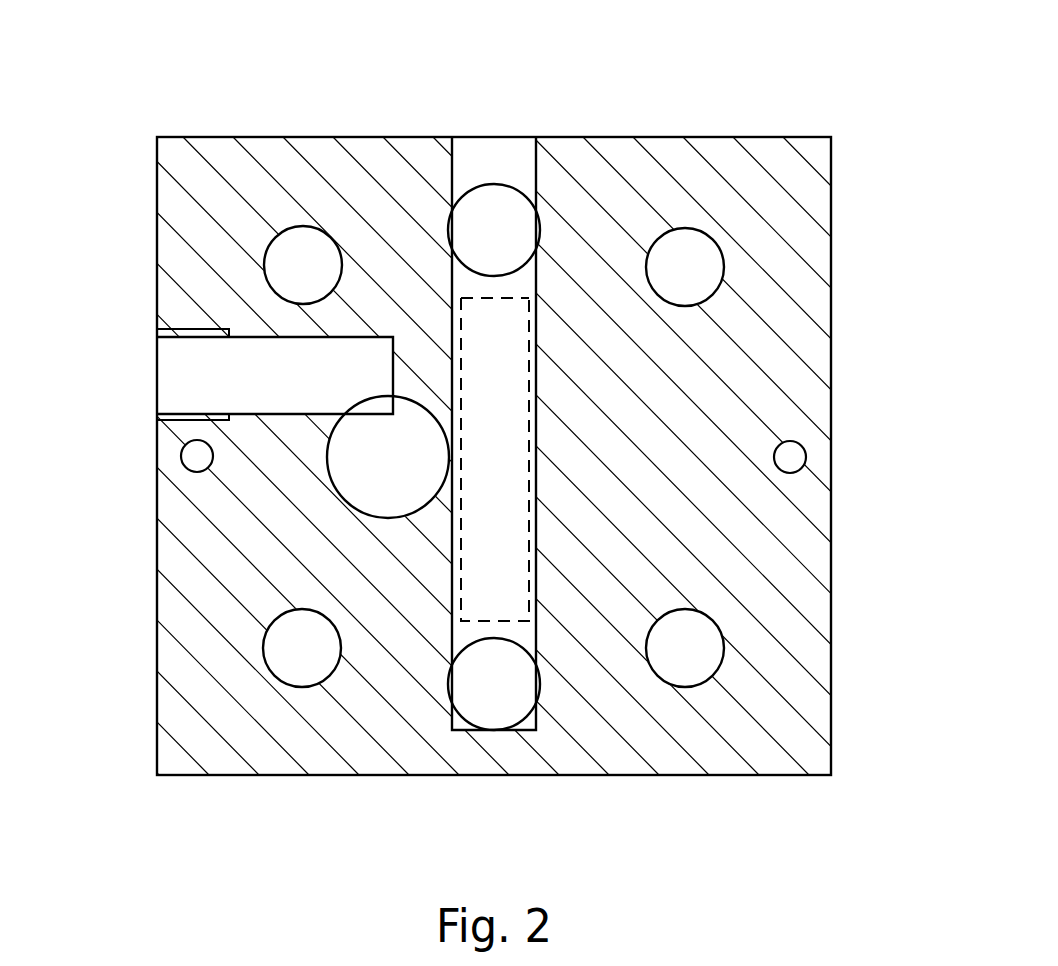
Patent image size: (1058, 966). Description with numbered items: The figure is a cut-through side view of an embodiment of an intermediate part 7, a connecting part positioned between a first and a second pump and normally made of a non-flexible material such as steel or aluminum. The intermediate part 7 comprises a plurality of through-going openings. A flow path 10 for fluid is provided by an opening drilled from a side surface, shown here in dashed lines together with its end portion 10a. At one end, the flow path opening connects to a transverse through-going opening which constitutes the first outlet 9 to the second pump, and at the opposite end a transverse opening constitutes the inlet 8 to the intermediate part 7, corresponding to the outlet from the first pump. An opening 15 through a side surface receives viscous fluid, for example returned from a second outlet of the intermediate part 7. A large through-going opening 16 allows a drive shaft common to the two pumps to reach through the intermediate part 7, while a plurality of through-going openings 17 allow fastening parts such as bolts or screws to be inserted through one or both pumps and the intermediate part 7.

The intermediate part 7 is at (186, 78).
The inlet 8 is at (498, 684).
The first outlet 9 is at (493, 228).
The flow path 10 is at (505, 330).
The channel end 10a is at (473, 297).
The opening 15 is at (233, 370).
The through-going opening 16 is at (353, 454).
The through-going openings 17 is at (287, 265).